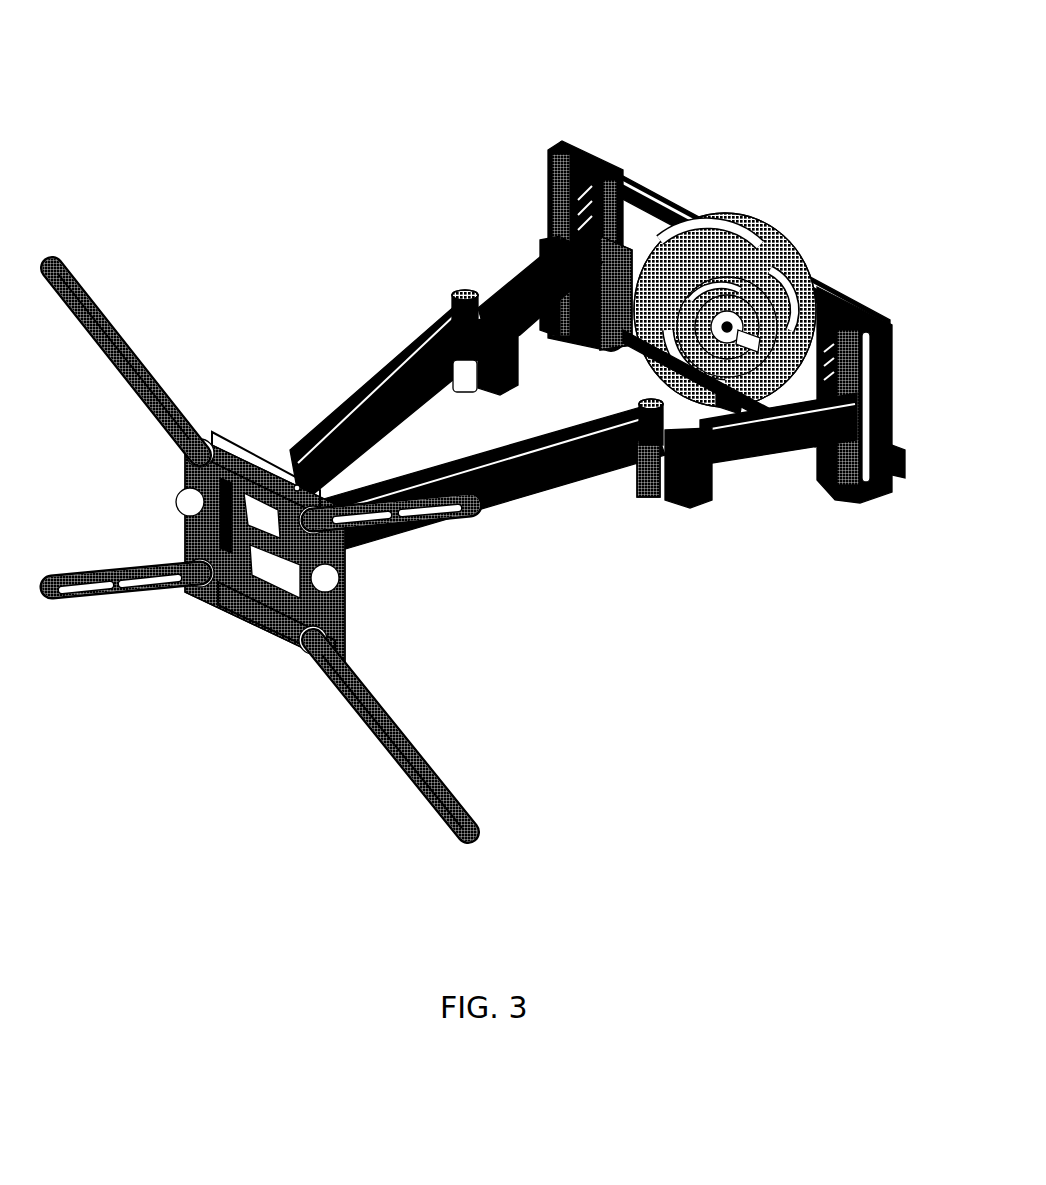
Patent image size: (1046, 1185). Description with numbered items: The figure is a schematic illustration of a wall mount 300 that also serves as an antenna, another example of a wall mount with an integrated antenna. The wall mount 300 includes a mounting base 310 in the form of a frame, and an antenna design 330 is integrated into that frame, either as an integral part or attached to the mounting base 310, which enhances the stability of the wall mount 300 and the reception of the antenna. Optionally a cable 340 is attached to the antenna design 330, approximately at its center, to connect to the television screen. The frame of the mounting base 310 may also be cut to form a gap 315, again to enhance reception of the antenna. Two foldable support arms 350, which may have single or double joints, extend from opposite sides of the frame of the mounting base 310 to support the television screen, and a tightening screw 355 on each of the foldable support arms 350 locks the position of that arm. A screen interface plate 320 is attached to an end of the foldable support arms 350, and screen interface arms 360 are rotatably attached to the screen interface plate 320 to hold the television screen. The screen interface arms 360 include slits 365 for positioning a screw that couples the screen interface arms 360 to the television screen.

The wall mount 300 is at (858, 148).
The mounting base 310 is at (890, 325).
The gap 315 is at (725, 398).
The screen interface plate 320 is at (262, 648).
The antenna design 330 is at (703, 237).
The cable 340 is at (753, 343).
The foldable support arms 350 is at (433, 322).
The tightening screw 355 is at (464, 290).
The screen interface arms 360 is at (397, 710).
The slits 365 is at (153, 580).